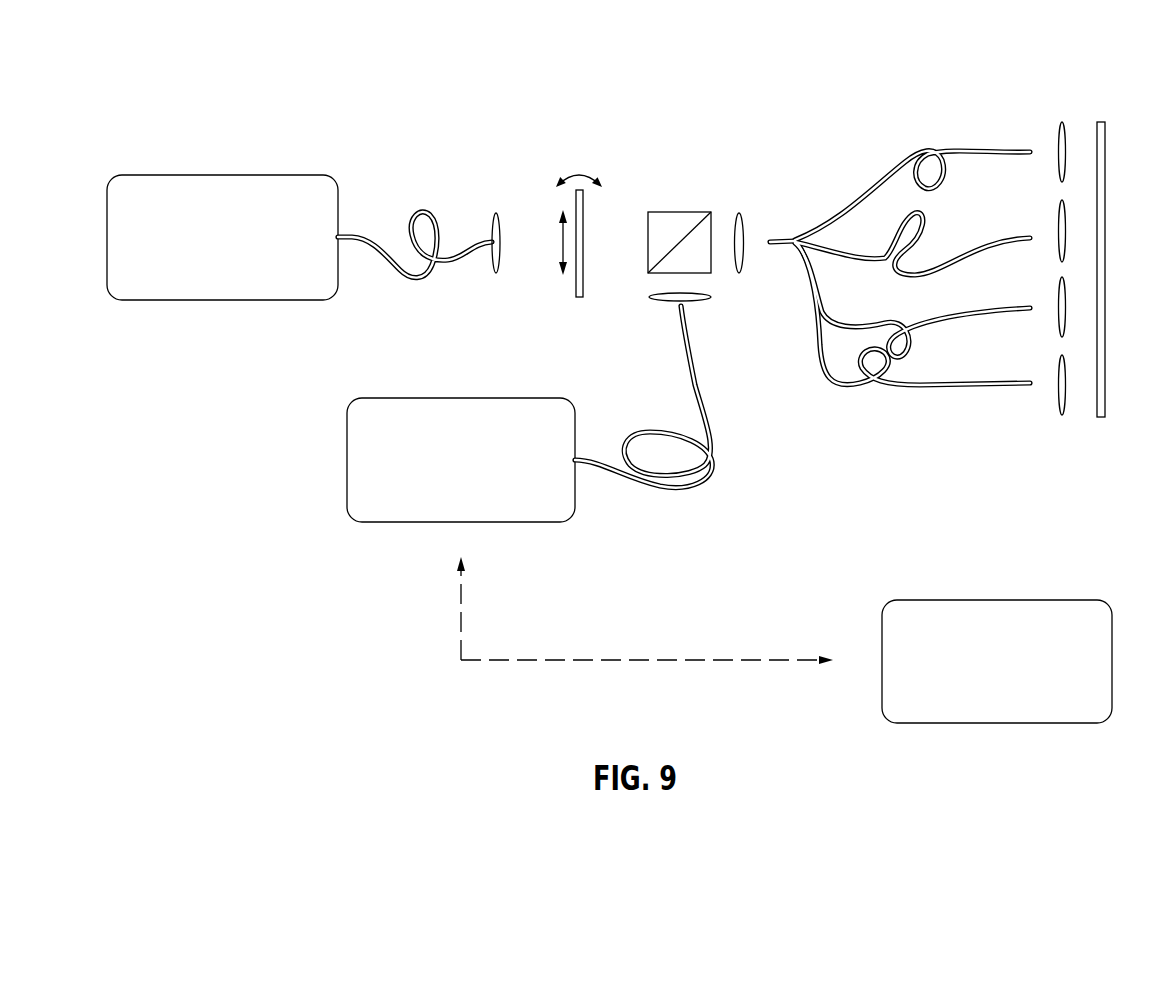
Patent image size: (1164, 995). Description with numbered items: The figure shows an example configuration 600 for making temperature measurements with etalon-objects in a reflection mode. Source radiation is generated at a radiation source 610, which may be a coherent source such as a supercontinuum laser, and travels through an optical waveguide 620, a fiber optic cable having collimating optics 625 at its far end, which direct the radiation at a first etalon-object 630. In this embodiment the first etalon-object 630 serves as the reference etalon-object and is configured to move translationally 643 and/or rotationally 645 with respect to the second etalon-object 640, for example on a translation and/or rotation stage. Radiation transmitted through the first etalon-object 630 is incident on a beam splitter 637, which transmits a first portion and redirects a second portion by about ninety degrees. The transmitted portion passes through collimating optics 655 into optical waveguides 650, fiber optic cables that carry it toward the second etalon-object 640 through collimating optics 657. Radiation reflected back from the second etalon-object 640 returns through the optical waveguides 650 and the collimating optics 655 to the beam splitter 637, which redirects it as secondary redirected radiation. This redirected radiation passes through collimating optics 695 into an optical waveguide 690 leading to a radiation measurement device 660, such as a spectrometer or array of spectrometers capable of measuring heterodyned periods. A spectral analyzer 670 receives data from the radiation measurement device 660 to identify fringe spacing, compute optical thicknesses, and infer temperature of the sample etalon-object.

The configuration 600 is at (180, 59).
The radiation source 610 is at (180, 175).
The optical waveguide 620 is at (412, 283).
The collimating optics 625 is at (487, 232).
The translational movement 643 is at (563, 212).
The rotational movement 645 is at (578, 178).
The first etalon-object 630 is at (582, 305).
The beam splitter 637 is at (676, 211).
The collimating optics 655 is at (742, 276).
The collimating optics 695 is at (692, 302).
The radiation measurement device 660 is at (418, 398).
The optical waveguide 690 is at (668, 490).
The optical waveguides 650 is at (903, 152).
The collimating optics 657 is at (1057, 138).
The second etalon-object 640 is at (1104, 428).
The spectral analyzer 670 is at (1040, 600).